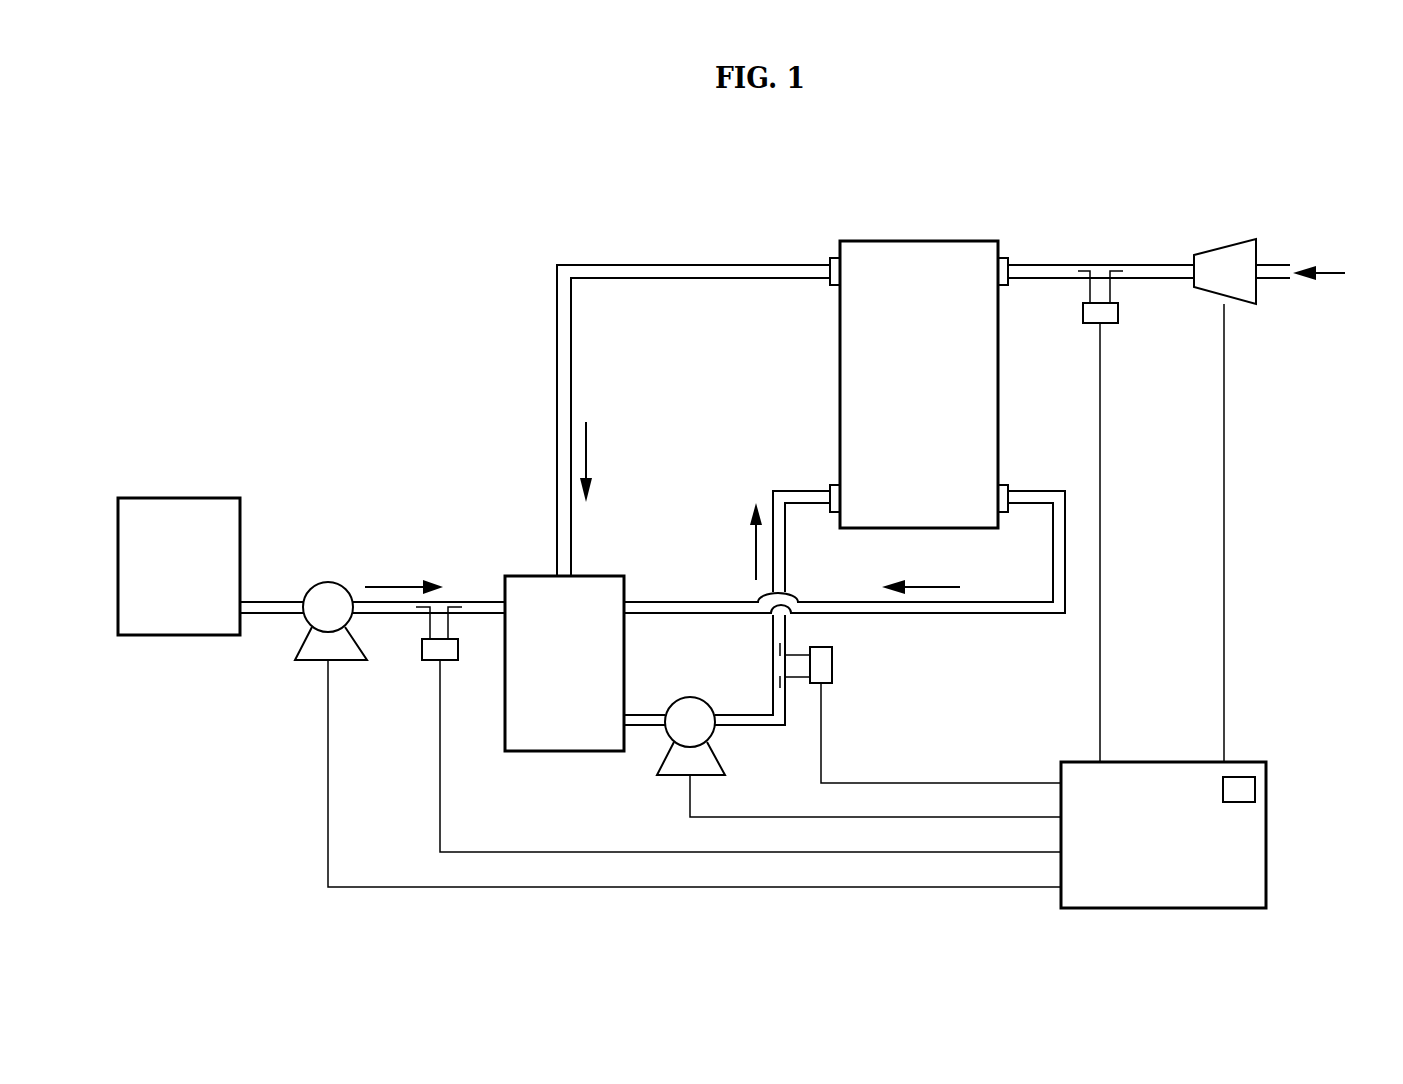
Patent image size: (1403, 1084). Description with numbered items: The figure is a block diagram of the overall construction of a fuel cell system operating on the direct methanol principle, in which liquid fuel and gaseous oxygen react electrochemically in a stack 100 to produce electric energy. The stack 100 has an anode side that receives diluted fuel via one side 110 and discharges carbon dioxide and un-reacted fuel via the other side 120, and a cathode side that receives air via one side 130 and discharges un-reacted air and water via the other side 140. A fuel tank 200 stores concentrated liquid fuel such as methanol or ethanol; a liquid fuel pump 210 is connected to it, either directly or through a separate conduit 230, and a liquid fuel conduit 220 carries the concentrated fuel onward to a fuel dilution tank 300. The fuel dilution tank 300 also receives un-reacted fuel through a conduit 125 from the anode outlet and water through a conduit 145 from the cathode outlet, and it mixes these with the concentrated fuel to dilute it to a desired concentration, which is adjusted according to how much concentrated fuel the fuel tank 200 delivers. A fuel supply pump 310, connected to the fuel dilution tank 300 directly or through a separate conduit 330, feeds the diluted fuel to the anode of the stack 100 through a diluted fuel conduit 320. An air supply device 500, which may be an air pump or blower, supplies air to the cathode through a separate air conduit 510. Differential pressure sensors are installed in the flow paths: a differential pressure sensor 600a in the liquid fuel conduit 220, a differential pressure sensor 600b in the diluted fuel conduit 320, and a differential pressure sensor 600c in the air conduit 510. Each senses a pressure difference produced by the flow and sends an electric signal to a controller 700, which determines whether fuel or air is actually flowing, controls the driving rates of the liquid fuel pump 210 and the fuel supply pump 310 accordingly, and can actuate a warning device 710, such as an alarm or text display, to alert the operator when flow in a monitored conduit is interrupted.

The stack 100 is at (838, 335).
The one side of the anode 110 is at (833, 483).
The other side of the anode 120 is at (832, 260).
The conduit 125 is at (677, 270).
The one side of the cathode 130 is at (1005, 258).
The other side of the cathode 140 is at (1005, 483).
The conduit 145 is at (1065, 556).
The fuel tank 200 is at (180, 497).
The liquid fuel pump 210 is at (327, 582).
The liquid fuel conduit 220 is at (475, 600).
The separate conduit 230 is at (262, 615).
The fuel dilution tank 300 is at (563, 753).
The fuel supply pump 310 is at (693, 697).
The diluted fuel conduit 320 is at (767, 728).
The separate conduit 330 is at (650, 716).
The air supply device 500 is at (1222, 247).
The air conduit 510 is at (1146, 270).
The differential pressure sensor 600a is at (420, 650).
The differential pressure sensor 600b is at (832, 665).
The differential pressure sensor 600c is at (1118, 312).
The controller 700 is at (1267, 833).
The warning device 710 is at (1240, 777).